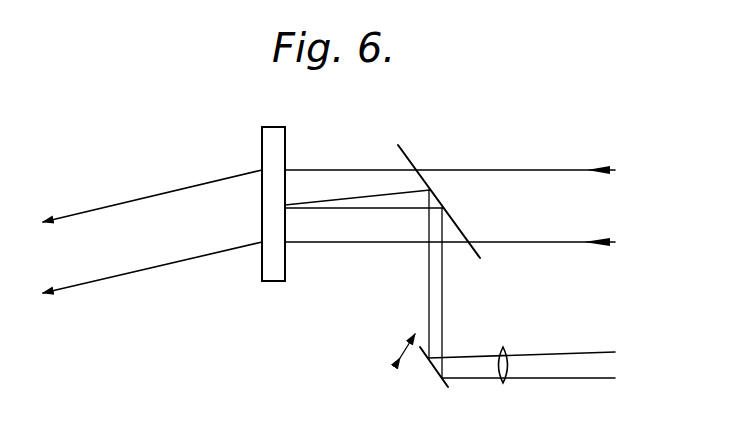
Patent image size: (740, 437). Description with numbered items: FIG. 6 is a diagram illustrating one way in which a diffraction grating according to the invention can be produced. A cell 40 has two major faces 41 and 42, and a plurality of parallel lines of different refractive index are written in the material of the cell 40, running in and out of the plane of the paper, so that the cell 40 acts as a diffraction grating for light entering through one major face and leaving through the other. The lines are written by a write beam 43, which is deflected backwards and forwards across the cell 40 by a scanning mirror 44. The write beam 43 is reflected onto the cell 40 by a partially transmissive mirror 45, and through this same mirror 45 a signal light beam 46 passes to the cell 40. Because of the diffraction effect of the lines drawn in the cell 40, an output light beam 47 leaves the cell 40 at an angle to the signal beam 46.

The cell 40 is at (272, 283).
The major face 41 is at (285, 271).
The major face 42 is at (261, 272).
The write beam 43 is at (545, 355).
The scanning mirror 44 is at (445, 385).
The partially transmissive mirror 45 is at (463, 232).
The signal light beam 46 is at (482, 168).
The output light beam 47 is at (137, 258).